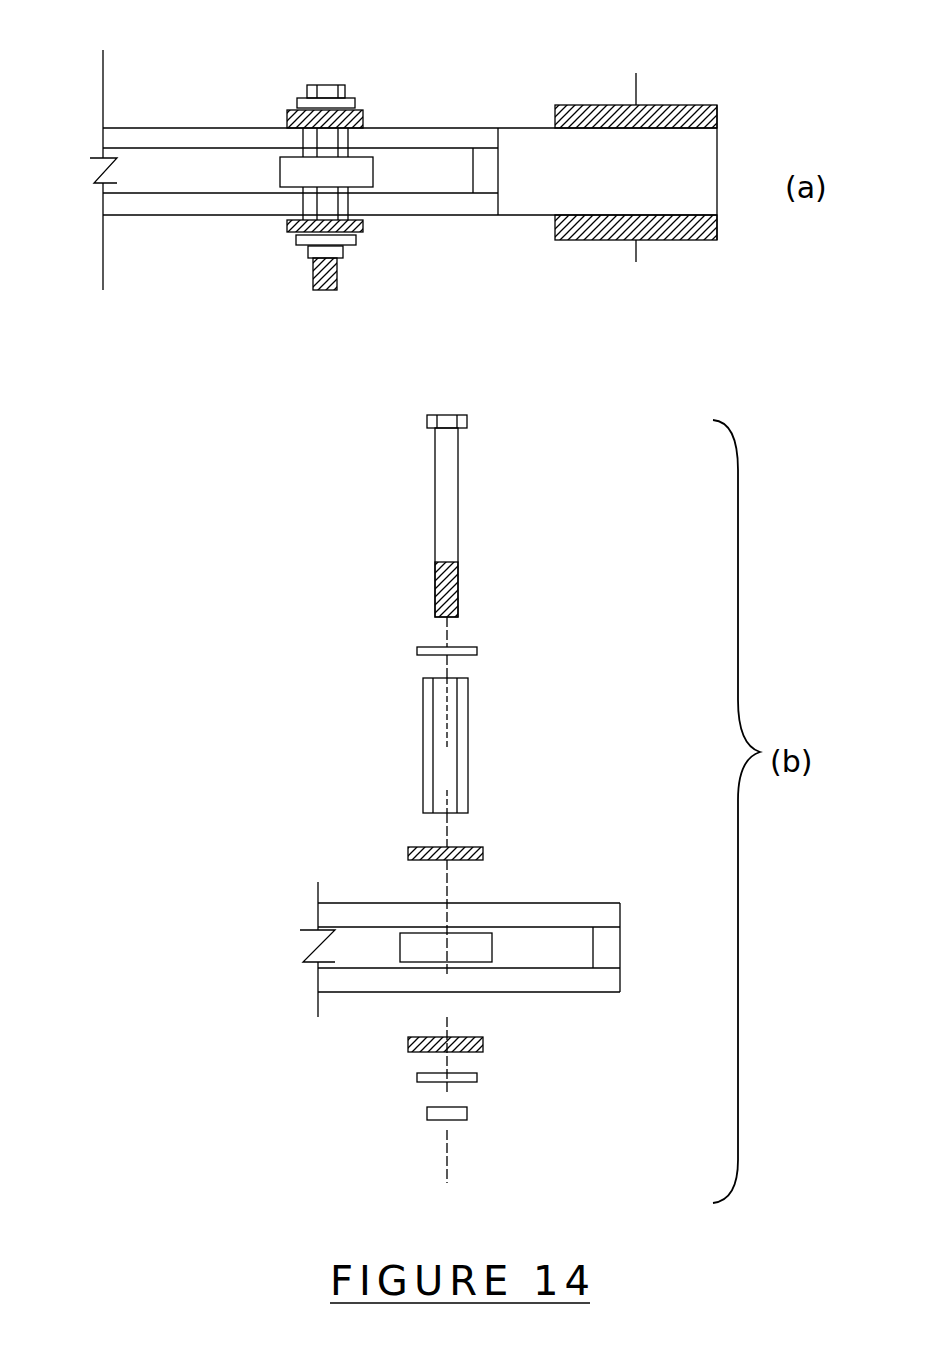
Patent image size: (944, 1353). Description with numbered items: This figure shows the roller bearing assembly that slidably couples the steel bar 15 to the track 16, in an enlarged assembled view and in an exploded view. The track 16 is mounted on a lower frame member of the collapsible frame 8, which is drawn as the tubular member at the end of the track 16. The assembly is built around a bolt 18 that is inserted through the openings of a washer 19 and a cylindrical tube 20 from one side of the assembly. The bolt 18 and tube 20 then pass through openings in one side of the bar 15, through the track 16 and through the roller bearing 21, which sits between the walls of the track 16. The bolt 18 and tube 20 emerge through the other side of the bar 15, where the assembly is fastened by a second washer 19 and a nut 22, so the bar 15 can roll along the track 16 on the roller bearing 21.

The collapsible frame 8 is at (658, 168).
The steel bar 15 is at (293, 113).
The track 16 is at (405, 193).
The bolt 18 is at (330, 83).
The washer 19 is at (353, 98).
The cylindrical tube 20 is at (350, 143).
The roller bearing 21 is at (280, 170).
The nut 22 is at (310, 255).